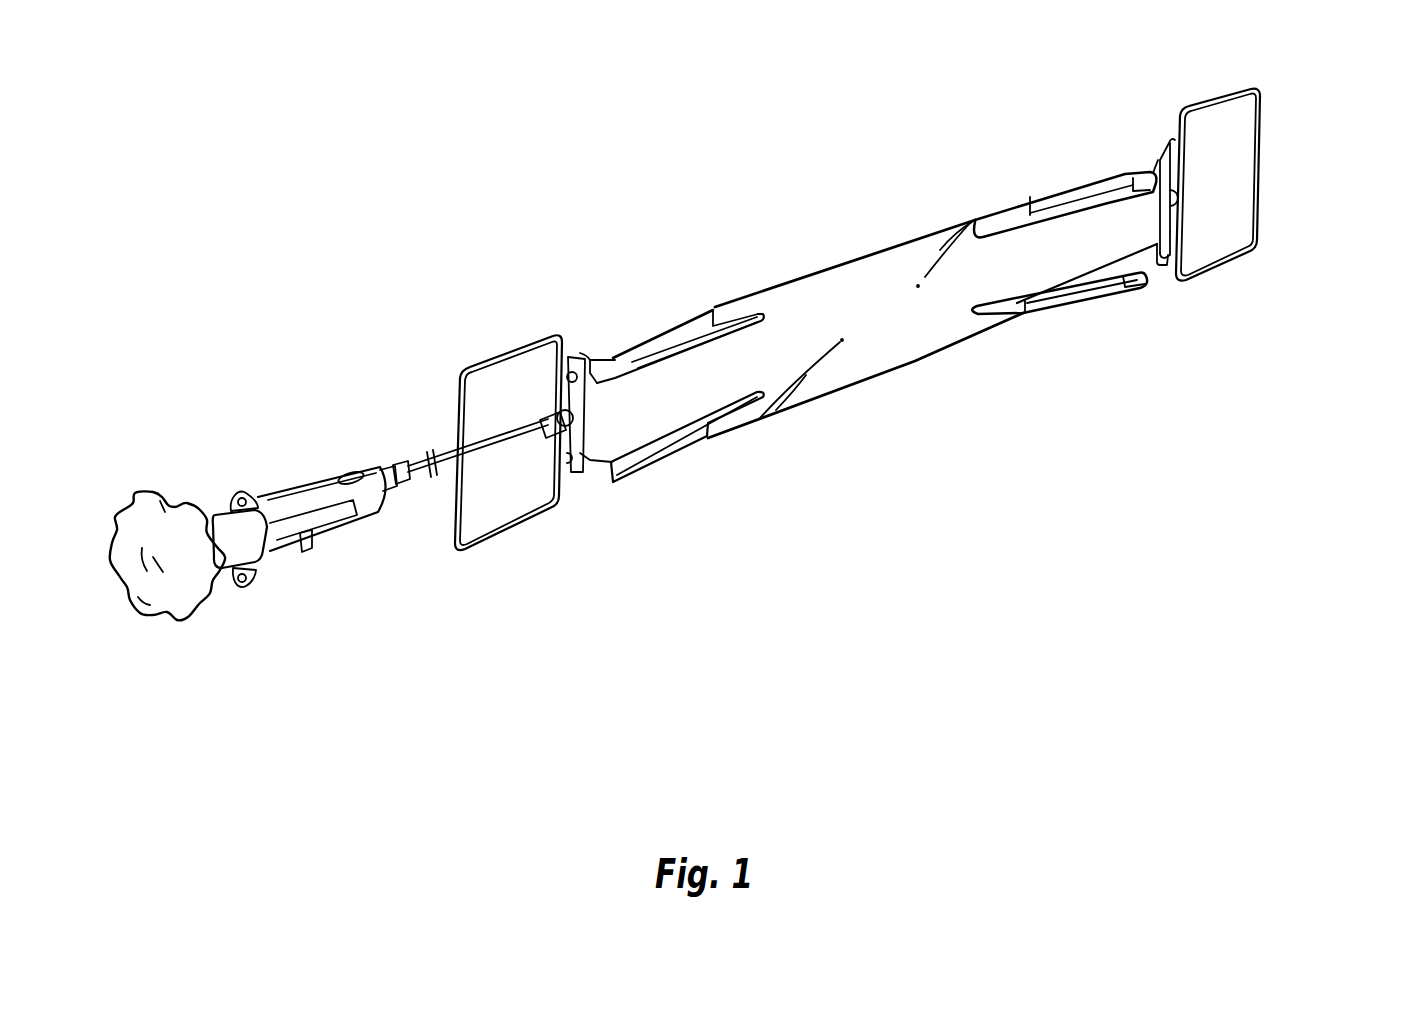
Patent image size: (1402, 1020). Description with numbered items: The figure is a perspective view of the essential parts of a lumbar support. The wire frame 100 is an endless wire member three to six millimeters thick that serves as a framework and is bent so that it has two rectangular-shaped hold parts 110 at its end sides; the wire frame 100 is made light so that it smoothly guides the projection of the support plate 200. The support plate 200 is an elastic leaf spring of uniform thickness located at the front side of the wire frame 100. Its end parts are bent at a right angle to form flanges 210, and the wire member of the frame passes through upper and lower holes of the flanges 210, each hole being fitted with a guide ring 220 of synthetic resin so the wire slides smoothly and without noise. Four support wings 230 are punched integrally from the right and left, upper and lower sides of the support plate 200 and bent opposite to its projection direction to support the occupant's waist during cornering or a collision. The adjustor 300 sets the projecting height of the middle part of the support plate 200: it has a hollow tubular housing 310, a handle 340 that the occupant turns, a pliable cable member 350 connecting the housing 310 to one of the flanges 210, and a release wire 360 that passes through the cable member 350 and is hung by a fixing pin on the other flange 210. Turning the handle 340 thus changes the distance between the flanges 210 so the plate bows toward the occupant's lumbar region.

The wire frame 100 is at (507, 537).
The hold part 110 is at (450, 547).
The support plate 200 is at (887, 360).
The flange 210 is at (587, 353).
The guide ring 220 is at (580, 477).
The support wing 230 is at (697, 323).
The adjustor 300 is at (277, 466).
The housing 310 is at (315, 492).
The handle 340 is at (140, 603).
The cable member 350 is at (500, 443).
The release wire 360 is at (490, 443).